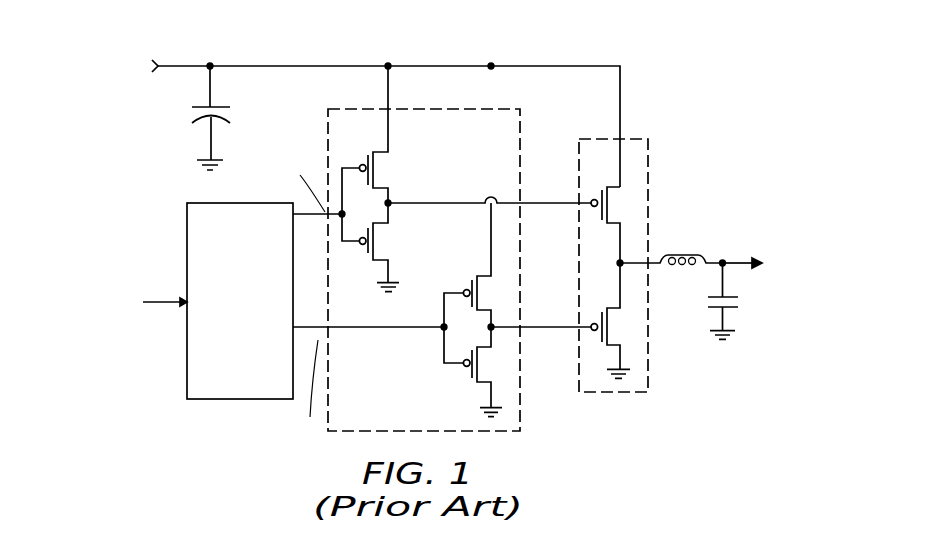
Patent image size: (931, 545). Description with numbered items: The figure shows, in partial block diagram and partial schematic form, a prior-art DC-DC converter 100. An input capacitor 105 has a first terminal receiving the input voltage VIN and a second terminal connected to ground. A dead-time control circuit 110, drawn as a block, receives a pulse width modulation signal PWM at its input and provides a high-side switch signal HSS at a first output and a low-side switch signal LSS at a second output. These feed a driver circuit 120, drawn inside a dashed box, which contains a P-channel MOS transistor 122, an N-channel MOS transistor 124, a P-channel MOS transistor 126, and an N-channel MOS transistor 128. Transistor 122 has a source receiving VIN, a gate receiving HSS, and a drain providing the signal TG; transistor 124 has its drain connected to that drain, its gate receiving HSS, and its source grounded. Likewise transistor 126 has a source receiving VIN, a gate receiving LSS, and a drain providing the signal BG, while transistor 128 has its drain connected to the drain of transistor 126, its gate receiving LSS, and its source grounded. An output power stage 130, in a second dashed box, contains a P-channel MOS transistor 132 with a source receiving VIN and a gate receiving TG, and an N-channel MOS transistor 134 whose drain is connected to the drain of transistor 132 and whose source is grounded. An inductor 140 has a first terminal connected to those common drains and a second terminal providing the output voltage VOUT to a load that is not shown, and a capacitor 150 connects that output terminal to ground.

The DC-DC converter 100 is at (133, 33).
The input capacitor 105 is at (222, 105).
The dead-time control circuit 110 is at (187, 253).
The driver circuit 120 is at (357, 108).
The P-channel MOS transistor 122 is at (378, 150).
The N-channel MOS transistor 124 is at (380, 260).
The P-channel MOS transistor 126 is at (480, 272).
The N-channel MOS transistor 128 is at (482, 382).
The output power stage 130 is at (632, 139).
The P-channel MOS transistor 132 is at (615, 185).
The N-channel MOS transistor 134 is at (615, 308).
The inductor 140 is at (685, 255).
The capacitor 150 is at (737, 307).